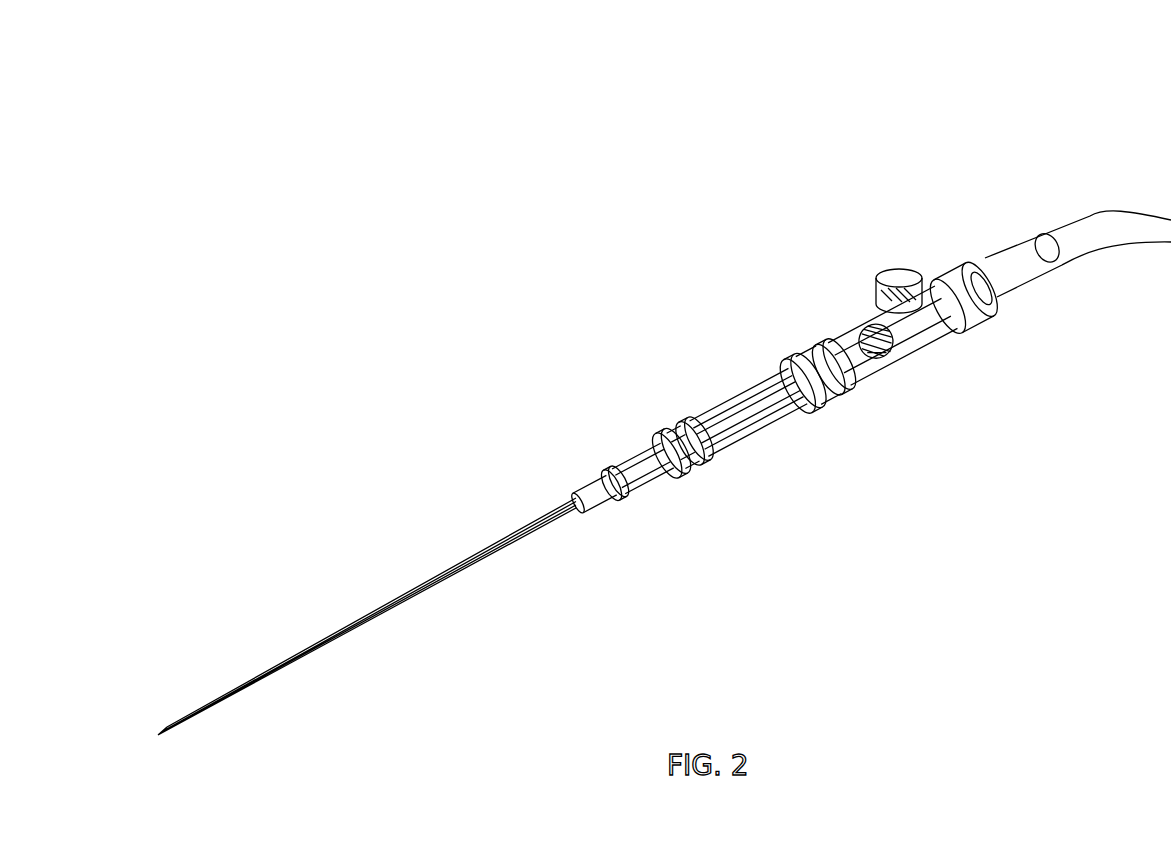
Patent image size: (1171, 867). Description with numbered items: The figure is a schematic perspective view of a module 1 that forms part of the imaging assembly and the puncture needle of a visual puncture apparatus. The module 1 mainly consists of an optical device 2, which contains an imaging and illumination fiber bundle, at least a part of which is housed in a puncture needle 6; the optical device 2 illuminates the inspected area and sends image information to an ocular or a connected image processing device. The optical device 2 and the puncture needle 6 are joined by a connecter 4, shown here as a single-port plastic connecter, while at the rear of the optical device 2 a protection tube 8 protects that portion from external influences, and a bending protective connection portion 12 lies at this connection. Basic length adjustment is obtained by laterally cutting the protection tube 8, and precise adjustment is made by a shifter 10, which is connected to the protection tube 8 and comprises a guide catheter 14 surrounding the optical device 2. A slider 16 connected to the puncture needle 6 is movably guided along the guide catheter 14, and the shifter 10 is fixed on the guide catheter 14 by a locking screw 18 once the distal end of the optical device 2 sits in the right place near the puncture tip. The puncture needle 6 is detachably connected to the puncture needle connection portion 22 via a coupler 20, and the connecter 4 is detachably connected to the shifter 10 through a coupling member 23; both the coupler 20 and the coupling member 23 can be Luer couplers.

The module 1 is at (497, 450).
The optical device 2 is at (725, 403).
The connecter 4 is at (700, 413).
The puncture needle 6 is at (335, 617).
The protection tube 8 is at (1094, 222).
The shifter 10 is at (866, 326).
The bending protective connection portion 12 is at (1022, 262).
The guide catheter 14 is at (940, 276).
The slider 16 is at (890, 367).
The locking screw 18 is at (937, 350).
The coupler 20 is at (640, 507).
The puncture needle connection portion 22 is at (652, 494).
The coupling member 23 is at (785, 428).